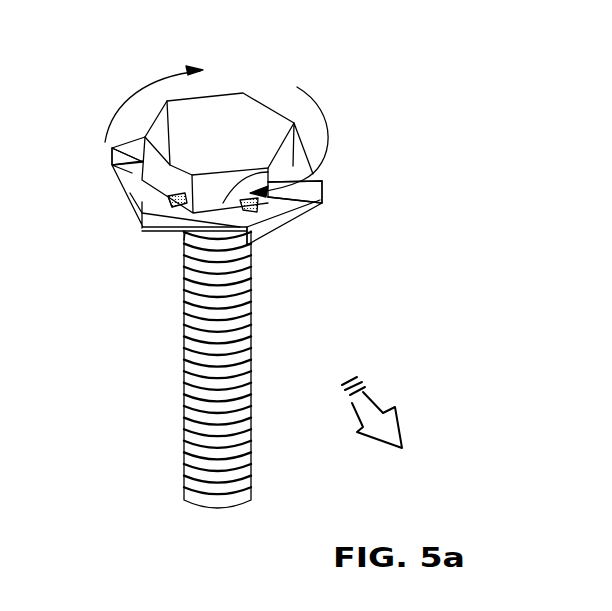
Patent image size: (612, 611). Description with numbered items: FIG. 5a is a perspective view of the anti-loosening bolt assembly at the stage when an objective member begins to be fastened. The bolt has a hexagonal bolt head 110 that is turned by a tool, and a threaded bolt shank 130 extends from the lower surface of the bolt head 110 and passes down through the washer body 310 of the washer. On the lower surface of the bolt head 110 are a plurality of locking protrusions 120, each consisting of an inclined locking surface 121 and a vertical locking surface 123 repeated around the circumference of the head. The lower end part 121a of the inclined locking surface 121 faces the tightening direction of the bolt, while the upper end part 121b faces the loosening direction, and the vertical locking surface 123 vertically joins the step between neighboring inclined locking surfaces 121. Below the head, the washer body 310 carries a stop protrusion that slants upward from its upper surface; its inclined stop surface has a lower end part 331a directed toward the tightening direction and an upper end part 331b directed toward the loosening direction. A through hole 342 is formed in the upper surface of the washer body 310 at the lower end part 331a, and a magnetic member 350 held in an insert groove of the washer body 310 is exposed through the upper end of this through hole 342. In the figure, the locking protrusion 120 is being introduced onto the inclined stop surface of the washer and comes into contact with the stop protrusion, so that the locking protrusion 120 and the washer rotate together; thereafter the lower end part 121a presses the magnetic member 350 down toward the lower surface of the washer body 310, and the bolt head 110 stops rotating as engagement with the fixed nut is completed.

The bolt head 110 is at (260, 106).
The locking protrusion 120 is at (367, 178).
The inclined locking surface 121 is at (313, 184).
The lower end part of the inclined locking surface 121a is at (163, 102).
The upper end part of the inclined locking surface 121b is at (254, 208).
The vertical locking surface 123 is at (282, 202).
The bolt shank 130 is at (251, 436).
The washer body 310 is at (125, 201).
The lower end part of the inclined stop surface 331a is at (142, 230).
The upper end part of the inclined stop surface 331b is at (253, 243).
The through hole 342 is at (185, 233).
The magnetic member 350 is at (187, 206).